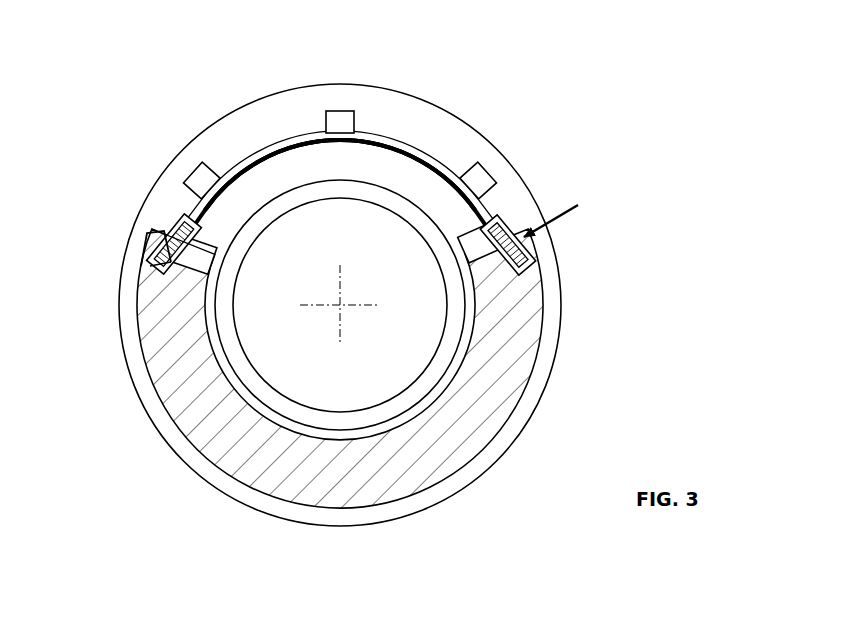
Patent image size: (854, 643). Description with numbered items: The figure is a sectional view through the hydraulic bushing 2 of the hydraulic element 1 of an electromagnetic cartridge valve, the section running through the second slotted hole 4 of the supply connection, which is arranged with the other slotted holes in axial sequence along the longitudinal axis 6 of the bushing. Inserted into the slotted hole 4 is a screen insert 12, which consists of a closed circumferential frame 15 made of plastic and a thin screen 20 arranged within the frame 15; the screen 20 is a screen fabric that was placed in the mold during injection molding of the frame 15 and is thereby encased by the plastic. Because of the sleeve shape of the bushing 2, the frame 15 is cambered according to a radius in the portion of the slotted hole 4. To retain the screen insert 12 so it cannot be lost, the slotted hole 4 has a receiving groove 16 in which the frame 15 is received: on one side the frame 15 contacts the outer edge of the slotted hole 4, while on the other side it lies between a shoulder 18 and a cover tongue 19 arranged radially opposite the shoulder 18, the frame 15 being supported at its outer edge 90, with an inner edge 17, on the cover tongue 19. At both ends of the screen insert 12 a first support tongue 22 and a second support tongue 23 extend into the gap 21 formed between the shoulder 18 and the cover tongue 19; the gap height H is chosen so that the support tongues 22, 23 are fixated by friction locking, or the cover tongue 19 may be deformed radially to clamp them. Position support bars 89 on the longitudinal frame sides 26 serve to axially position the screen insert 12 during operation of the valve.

The hydraulic element 1 is at (608, 136).
The hydraulic bushing 2 is at (570, 300).
The second slotted hole 4 is at (456, 150).
The longitudinal axis 6 is at (336, 310).
The screen insert 12 is at (285, 140).
The frame 15 is at (377, 138).
The receiving groove 16 is at (526, 284).
The inner edge 17 is at (150, 272).
The shoulder 18 is at (210, 244).
The cover tongue 19 is at (147, 234).
The thin screen 20 is at (407, 146).
The gap 21 is at (208, 296).
The first support tongue 22 is at (177, 224).
The second support tongue 23 is at (512, 224).
The longitudinal frame side 26 is at (253, 150).
The position support bar 89 is at (340, 112).
The outer edge 90 is at (150, 265).
The gap height H is at (563, 215).